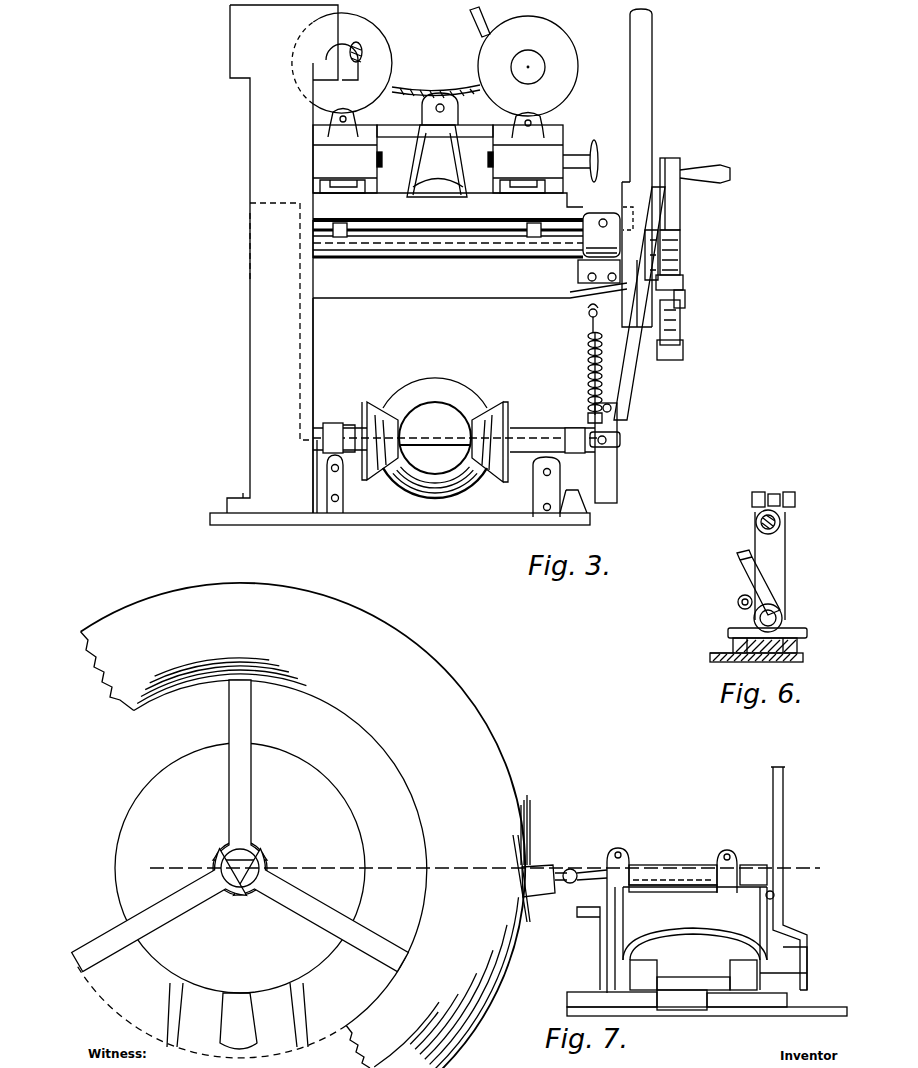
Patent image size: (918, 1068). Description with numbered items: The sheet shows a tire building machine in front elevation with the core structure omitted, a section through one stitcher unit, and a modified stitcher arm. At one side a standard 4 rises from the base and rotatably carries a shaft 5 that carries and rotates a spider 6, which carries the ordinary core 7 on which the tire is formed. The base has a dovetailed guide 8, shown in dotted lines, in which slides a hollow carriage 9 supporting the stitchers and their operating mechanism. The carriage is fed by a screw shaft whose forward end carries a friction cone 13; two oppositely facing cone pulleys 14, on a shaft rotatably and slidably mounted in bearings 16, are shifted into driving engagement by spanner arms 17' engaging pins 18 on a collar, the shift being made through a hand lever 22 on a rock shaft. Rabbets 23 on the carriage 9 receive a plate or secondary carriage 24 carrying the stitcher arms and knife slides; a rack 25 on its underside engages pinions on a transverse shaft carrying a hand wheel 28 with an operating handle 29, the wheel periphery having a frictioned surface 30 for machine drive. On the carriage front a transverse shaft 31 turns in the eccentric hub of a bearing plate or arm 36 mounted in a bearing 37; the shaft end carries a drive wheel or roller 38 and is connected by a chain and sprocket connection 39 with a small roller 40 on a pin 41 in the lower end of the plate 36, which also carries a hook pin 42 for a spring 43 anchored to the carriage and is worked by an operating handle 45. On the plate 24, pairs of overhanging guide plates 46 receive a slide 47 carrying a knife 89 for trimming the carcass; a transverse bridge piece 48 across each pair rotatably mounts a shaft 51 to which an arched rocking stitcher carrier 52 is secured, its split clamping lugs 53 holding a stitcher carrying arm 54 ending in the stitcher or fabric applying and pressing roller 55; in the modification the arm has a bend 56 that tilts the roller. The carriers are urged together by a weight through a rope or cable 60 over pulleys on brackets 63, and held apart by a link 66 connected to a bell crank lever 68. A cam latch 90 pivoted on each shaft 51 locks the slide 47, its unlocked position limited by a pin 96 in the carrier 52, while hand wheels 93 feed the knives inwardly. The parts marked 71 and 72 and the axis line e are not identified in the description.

In FIG. 3, the standard 4 is at (257, 357).
In FIG. 7, the shaft 5 is at (247, 860).
In FIG. 7, the spider 6 is at (250, 790).
In FIG. 7, the core 7 is at (493, 752).
In FIG. 3, the dove tailed guide 8 is at (322, 424).
In FIG. 3, the hollow carriage 9 is at (404, 405).
In FIG. 3, the friction cone 13 is at (433, 380).
In FIG. 3, the cone pulleys 14 is at (378, 400).
In FIG. 3, the bearings 16 is at (345, 478).
In FIG. 3, the spanner arms 17' is at (627, 453).
In FIG. 3, the pins 18 is at (618, 440).
In FIG. 3, the hand lever 22 is at (598, 380).
In FIG. 3, the rabbets 23 is at (580, 212).
In FIG. 3, the plate or secondary carriage 24 is at (448, 205).
In FIG. 6, the plate or secondary carriage 24 is at (797, 662).
In FIG. 3, the rack 25 is at (350, 240).
In FIG. 3, the hand wheel 28 is at (680, 350).
In FIG. 3, the operating handle 29 is at (727, 166).
In FIG. 3, the frictioned surface 30 is at (672, 212).
In FIG. 3, the transverse shaft 31 is at (472, 266).
In FIG. 3, the bearing plate or arm 36 is at (627, 289).
In FIG. 3, the bearing 37 is at (580, 270).
In FIG. 3, the drive wheel or roller 38 is at (672, 238).
In FIG. 3, the chain and sprocket connection 39 is at (672, 283).
In FIG. 3, the small roller 40 is at (675, 318).
In FIG. 3, the pin 41 is at (686, 298).
In FIG. 3, the hook pin 42 is at (588, 321).
In FIG. 3, the spring 43 is at (588, 367).
In FIG. 3, the operating handle 45 is at (644, 90).
In FIG. 3, the guide plates 46 is at (356, 206).
In FIG. 6, the guide plates 46 is at (733, 641).
In FIG. 7, the guide plates 46 is at (645, 1005).
In FIG. 6, the slide 47 is at (735, 656).
In FIG. 6, the transverse bridge piece 48 is at (795, 632).
In FIG. 7, the transverse bridge piece 48 is at (717, 953).
In FIG. 6, the shaft 51 is at (780, 612).
In FIG. 7, the shaft 51 is at (700, 990).
In FIG. 6, the arched rocking stitcher carrier 52 is at (786, 553).
In FIG. 7, the arched rocking stitcher carrier 52 is at (770, 910).
In FIG. 7, the split clamping lugs 53 is at (638, 862).
In FIG. 7, the stitcher carrying arm 54 is at (757, 864).
In FIG. 3, the stitcher or fabric applying and pressing roller 55 is at (352, 30).
In FIG. 7, the stitcher or fabric applying and pressing roller 55 is at (530, 856).
In FIG. 7, the bend 56 is at (592, 848).
In FIG. 3, the rope or cable 60 is at (410, 90).
In FIG. 3, the brackets 63 is at (437, 161).
In FIG. 3, the link 66 is at (420, 118).
In FIG. 3, the bell crank lever 68 is at (488, 14).
In FIG. 7, the bell crank lever 68 is at (783, 797).
In FIG. 6, the pivot pin 71 is at (781, 520).
In FIG. 7, the ball joint 72 is at (572, 866).
In FIG. 3, the knives 89 is at (438, 151).
In FIG. 6, the cam latch 90 is at (745, 578).
In FIG. 3, the hand wheels 93 is at (597, 156).
In FIG. 6, the pin 96 is at (738, 601).
In FIG. 7, the axis line e is at (483, 873).